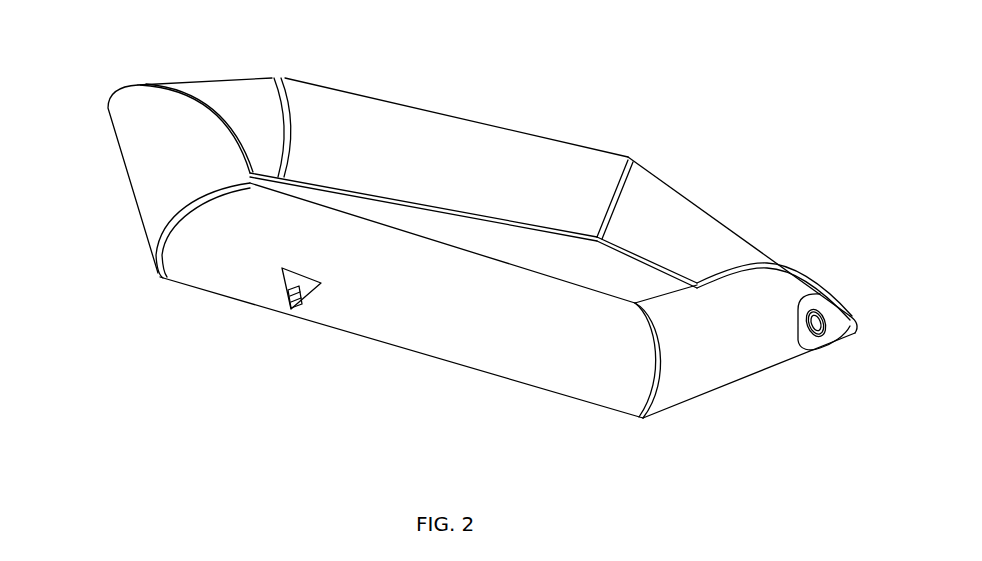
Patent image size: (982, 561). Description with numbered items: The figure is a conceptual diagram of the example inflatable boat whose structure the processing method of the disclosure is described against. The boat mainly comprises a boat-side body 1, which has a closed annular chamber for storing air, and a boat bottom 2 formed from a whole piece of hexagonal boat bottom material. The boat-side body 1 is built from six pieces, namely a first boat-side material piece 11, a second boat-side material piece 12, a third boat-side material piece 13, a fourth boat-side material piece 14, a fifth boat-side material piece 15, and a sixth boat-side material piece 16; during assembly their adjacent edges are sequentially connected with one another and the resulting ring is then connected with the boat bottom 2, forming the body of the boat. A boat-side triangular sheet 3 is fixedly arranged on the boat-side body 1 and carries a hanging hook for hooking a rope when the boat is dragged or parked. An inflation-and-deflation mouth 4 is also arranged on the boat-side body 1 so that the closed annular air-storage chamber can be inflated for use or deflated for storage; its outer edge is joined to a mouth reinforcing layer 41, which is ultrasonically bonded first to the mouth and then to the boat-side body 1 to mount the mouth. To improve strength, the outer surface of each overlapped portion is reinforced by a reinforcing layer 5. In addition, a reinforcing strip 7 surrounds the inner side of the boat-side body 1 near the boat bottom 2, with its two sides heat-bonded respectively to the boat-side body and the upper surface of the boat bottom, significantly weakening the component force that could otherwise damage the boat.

The boat-side body 1 is at (492, 112).
The first boat-side material piece 11 is at (542, 167).
The second boat-side material piece 12 is at (683, 205).
The boat bottom 2 is at (510, 245).
The fourth boat-side material piece 14 is at (520, 368).
The boat-side triangular sheet 3 is at (287, 308).
The inflation-and-deflation mouth 4 is at (820, 333).
The mouth reinforcing layer 41 is at (857, 332).
The reinforcing layer 5 is at (792, 268).
The reinforcing strip 7 is at (697, 277).
The third boat-side material piece 13 is at (752, 358).
The fifth boat-side material piece 15 is at (150, 183).
The sixth boat-side material piece 16 is at (227, 83).